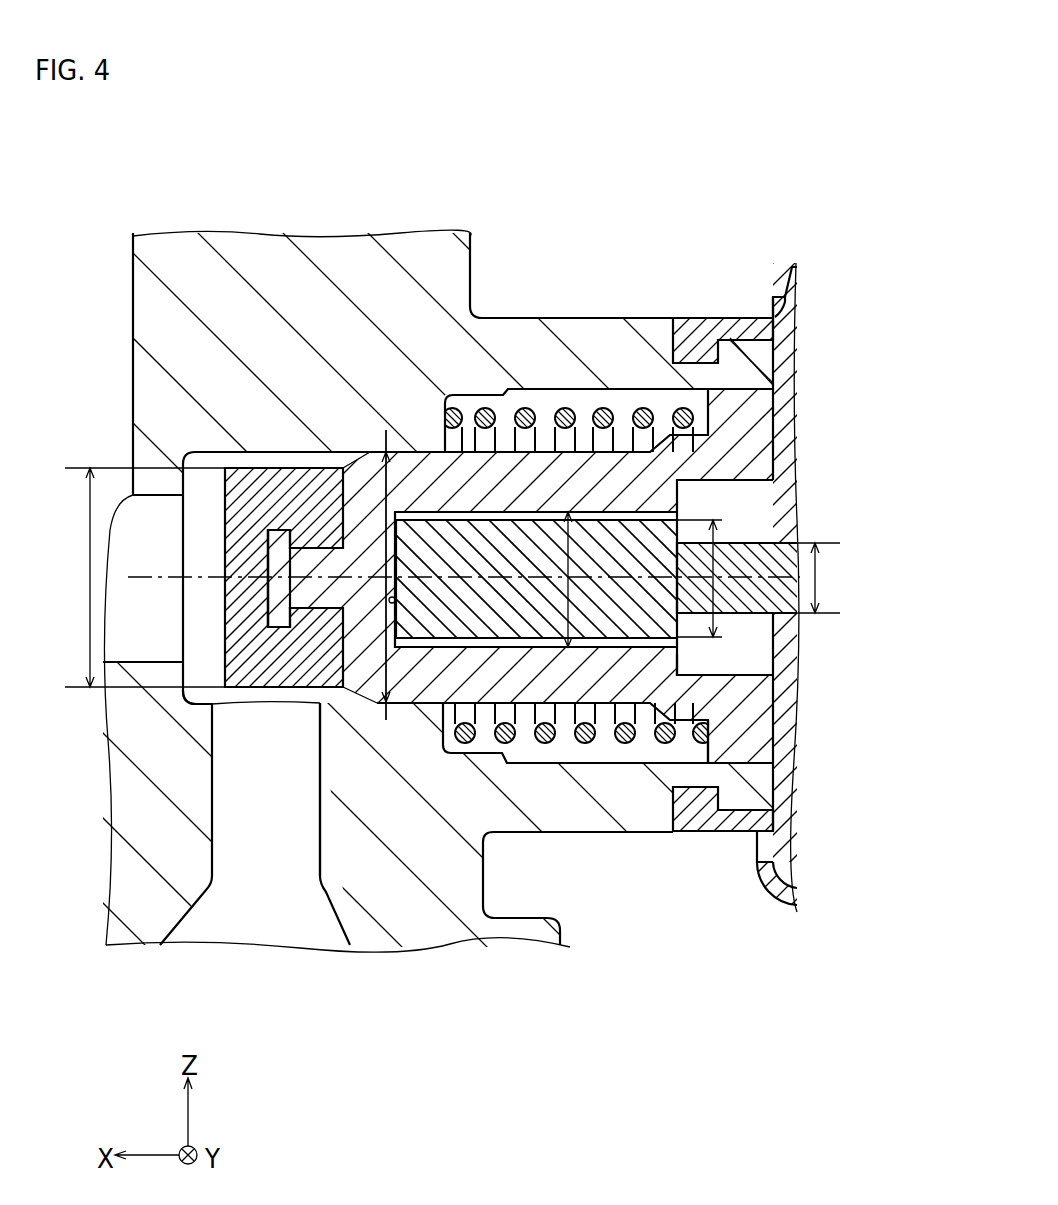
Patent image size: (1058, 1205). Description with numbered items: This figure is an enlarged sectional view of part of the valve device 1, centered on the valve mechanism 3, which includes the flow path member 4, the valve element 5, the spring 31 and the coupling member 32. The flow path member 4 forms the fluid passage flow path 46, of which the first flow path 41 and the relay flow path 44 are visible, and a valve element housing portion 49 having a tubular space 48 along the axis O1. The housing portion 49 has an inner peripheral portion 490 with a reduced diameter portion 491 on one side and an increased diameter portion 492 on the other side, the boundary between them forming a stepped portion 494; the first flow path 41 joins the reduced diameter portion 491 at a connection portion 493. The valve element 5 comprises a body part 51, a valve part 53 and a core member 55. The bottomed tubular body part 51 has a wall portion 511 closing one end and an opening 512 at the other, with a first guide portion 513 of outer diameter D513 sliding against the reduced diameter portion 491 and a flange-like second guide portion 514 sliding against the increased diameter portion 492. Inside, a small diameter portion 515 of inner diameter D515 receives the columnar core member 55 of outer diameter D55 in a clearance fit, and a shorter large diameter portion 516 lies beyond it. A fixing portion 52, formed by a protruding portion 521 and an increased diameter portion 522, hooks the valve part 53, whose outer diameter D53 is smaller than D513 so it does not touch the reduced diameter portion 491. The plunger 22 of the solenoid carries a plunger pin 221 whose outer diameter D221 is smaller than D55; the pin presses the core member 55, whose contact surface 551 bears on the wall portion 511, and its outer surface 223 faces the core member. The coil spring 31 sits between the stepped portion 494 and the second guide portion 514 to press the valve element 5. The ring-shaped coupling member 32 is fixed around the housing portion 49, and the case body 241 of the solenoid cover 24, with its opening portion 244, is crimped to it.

The valve device 1 is at (893, 218).
The valve mechanism 3 is at (65, 240).
The flow path member 4 is at (482, 252).
The relay flow path 44 is at (168, 450).
The fluid passage flow path 46 is at (336, 723).
The first flow path 41 is at (224, 918).
The connection portion 493 is at (262, 700).
The wall portion 511 is at (322, 704).
The reduced diameter portion 491 is at (320, 782).
The valve part 53 is at (282, 456).
The fixing portion 52 is at (358, 365).
The increased diameter portion 522 is at (275, 535).
The protruding portion 521 is at (312, 560).
The valve element 5 is at (531, 528).
The body part 51 is at (527, 438).
The first guide portion 513 is at (348, 706).
The outer diameter of first guide portion D513 is at (386, 430).
The small diameter portion 515 is at (454, 642).
The inner diameter of small diameter portion D515 is at (568, 548).
The core member 55 is at (638, 508).
The outer diameter of core member D55 is at (714, 604).
The contact surface 551 is at (395, 600).
The opening 512 is at (760, 480).
The large diameter portion 516 is at (677, 675).
The plunger 22 is at (763, 550).
The plunger pin 221 is at (794, 538).
The outer surface of shaft end 223 is at (752, 541).
The outer diameter of plunger pin D221 is at (816, 578).
The tubular space 48 is at (584, 412).
The spring 31 is at (628, 756).
The valve element housing portion 49 is at (632, 376).
The stepped portion 494 is at (450, 400).
The inner peripheral portion 490 is at (710, 740).
The increased diameter portion 492 is at (563, 753).
The coupling member 32 is at (748, 311).
The second guide portion 514 is at (770, 775).
The opening portion 244 is at (750, 848).
The cover 24 is at (789, 927).
The case body 241 is at (774, 910).
The axis O1 is at (164, 577).
The outer diameter of valve part D53 is at (90, 582).